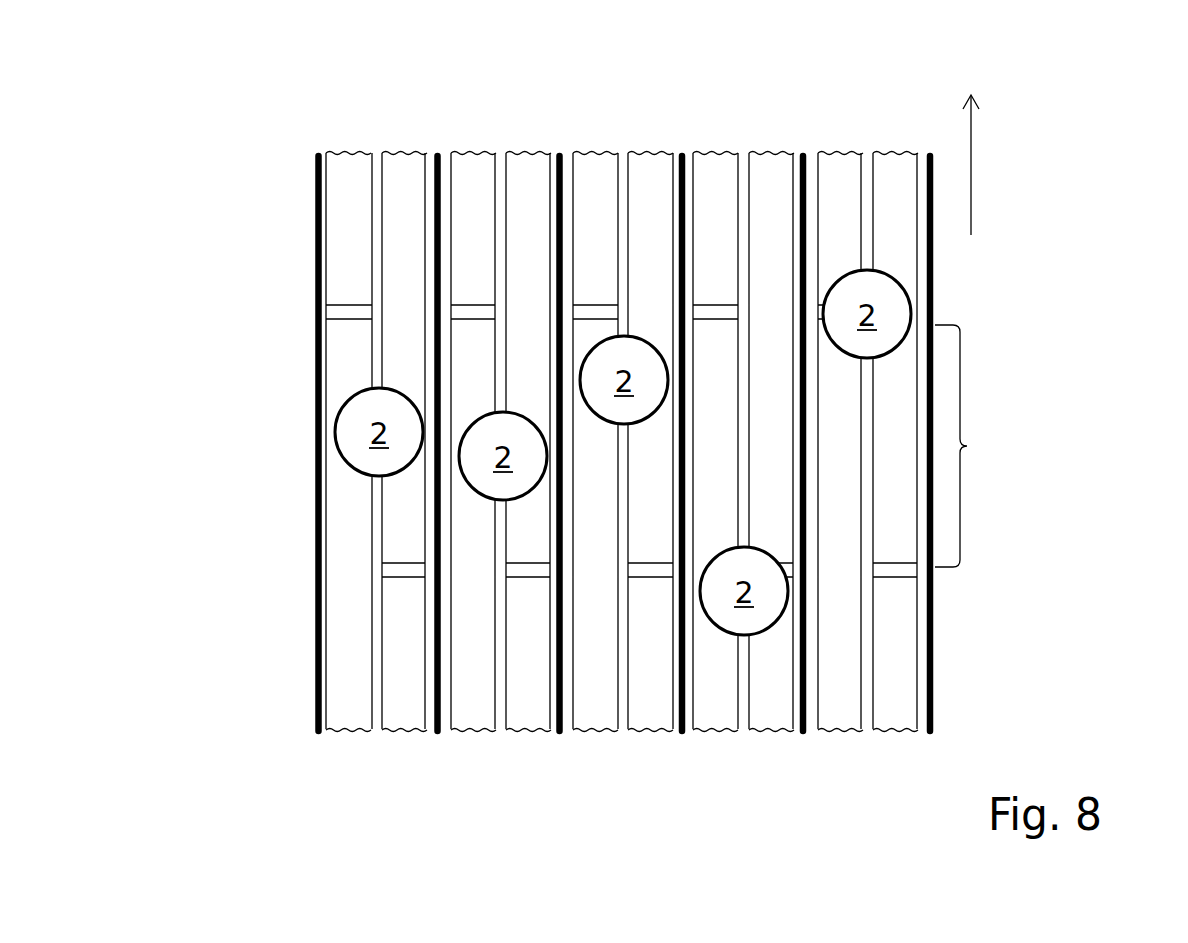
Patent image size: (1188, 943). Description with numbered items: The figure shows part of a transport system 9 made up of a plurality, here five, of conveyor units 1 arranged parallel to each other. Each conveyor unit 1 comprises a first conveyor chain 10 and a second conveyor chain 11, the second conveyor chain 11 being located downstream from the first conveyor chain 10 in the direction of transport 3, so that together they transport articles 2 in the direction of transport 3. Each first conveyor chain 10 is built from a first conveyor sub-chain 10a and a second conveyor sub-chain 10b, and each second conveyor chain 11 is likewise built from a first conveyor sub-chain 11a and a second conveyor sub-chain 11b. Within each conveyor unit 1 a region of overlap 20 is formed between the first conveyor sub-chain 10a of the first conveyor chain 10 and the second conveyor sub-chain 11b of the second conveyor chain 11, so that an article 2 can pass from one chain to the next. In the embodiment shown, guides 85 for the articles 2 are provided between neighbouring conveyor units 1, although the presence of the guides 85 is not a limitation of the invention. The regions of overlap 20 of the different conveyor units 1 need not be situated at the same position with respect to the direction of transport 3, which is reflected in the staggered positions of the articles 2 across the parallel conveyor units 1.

The conveyor unit 1 is at (299, 458).
The article 2 is at (623, 452).
The direction of transport 3 is at (971, 153).
The transport system 9 is at (675, 442).
The first conveyor chain 10 is at (569, 576).
The first conveyor sub-chain of the first conveyor chain 10a is at (343, 713).
The second conveyor sub-chain of the first conveyor chain 10b is at (408, 643).
The second conveyor chain 11 is at (548, 307).
The first conveyor sub-chain of the second conveyor chain 11a is at (343, 263).
The second conveyor sub-chain of the second conveyor chain 11b is at (398, 222).
The region of overlap 20 is at (967, 446).
The guide 85 is at (932, 653).